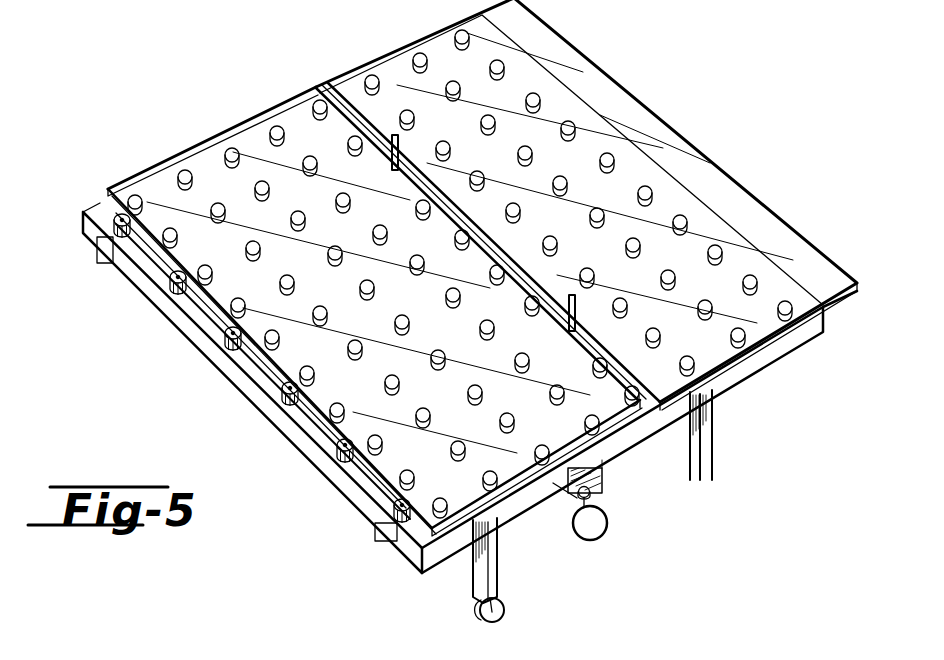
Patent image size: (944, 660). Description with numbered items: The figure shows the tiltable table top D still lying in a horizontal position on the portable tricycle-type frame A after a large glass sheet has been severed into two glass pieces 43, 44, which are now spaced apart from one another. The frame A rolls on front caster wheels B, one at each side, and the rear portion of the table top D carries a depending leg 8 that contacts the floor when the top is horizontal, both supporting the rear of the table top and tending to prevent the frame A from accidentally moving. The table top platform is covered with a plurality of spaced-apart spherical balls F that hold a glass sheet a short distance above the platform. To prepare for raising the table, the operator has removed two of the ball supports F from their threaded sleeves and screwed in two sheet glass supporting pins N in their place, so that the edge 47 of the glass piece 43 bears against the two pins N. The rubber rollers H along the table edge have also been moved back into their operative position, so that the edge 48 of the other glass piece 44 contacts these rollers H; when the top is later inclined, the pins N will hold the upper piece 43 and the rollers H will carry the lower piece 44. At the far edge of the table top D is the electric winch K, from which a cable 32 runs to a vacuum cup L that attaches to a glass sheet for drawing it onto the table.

The glass piece 43 is at (672, 128).
The glass piece 44 is at (247, 122).
The edge 47 is at (448, 219).
The edge 48 is at (268, 367).
The spherical balls F is at (180, 166).
The sheet glass supporting pin N is at (420, 142).
The rubber rollers H is at (180, 293).
The table top D is at (822, 318).
The frame A is at (497, 575).
The front caster wheel B is at (504, 615).
The depending leg 8 is at (714, 423).
The electric winch K is at (602, 467).
The cable 32 is at (593, 497).
The vacuum cup L is at (573, 523).